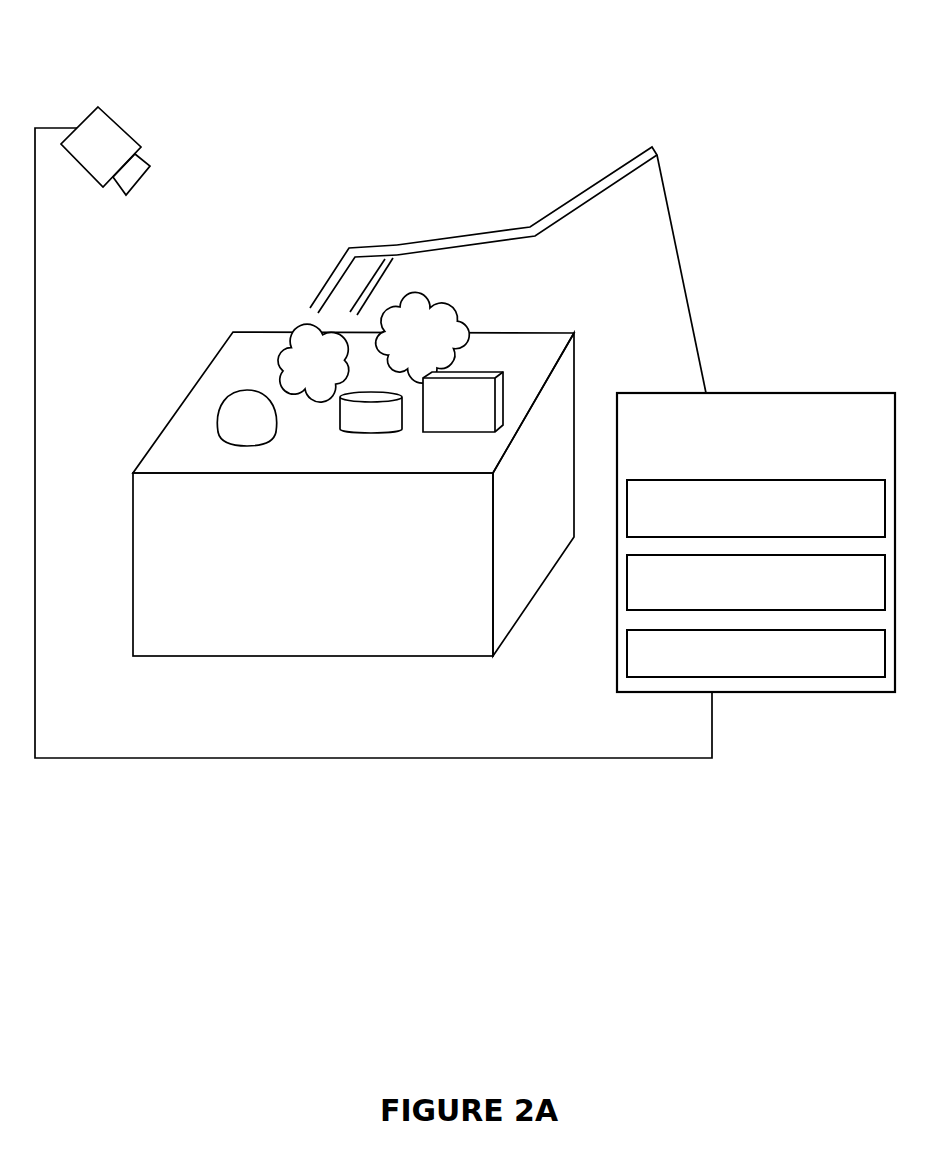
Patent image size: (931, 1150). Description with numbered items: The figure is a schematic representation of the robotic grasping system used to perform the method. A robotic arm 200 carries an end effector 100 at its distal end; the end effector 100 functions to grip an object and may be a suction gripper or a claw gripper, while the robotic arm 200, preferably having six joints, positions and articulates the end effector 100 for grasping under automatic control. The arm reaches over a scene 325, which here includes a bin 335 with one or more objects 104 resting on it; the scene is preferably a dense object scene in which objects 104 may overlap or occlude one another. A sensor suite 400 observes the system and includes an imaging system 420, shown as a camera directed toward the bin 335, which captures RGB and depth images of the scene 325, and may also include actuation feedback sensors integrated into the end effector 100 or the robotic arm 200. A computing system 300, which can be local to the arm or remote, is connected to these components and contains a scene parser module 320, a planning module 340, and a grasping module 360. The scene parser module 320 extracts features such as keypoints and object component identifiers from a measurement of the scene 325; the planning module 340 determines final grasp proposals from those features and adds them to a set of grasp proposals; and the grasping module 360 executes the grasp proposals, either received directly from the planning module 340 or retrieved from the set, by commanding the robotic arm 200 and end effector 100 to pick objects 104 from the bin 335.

The imaging system 420 is at (128, 97).
The robotic arm 200 is at (557, 208).
The end effector 100 is at (367, 228).
The sensor suite 400 is at (318, 277).
The bin 335 is at (168, 662).
The scene 325 is at (583, 277).
The object 104 is at (297, 312).
The computing system 300 is at (756, 542).
The scene parser module 320 is at (756, 508).
The planning module 340 is at (756, 582).
The grasping module 360 is at (756, 653).